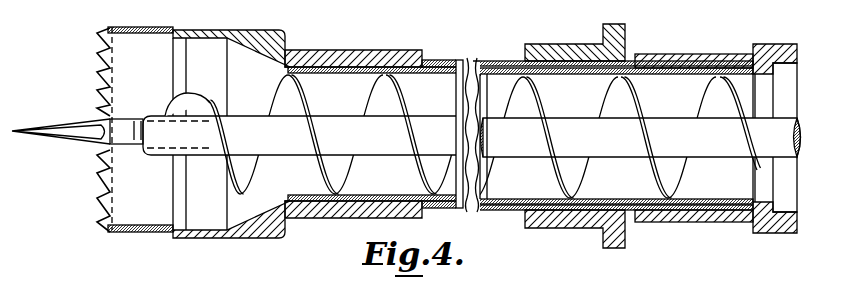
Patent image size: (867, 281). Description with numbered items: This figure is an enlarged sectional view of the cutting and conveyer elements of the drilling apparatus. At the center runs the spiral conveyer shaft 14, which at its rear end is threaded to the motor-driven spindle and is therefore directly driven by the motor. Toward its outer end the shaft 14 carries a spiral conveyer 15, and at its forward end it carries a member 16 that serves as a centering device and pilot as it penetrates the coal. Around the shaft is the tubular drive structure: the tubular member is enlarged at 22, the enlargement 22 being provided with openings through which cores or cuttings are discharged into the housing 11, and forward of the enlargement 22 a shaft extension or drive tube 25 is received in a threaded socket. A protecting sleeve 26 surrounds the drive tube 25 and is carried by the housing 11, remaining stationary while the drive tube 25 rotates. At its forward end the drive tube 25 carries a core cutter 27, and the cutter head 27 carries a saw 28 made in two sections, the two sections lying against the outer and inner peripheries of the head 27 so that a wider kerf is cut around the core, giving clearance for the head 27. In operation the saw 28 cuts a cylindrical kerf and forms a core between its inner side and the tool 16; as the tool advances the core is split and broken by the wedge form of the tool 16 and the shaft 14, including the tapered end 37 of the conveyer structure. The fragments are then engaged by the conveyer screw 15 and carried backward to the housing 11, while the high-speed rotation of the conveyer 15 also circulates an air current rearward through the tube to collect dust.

The housing 11 is at (557, 43).
The spiral conveyer shaft 14 is at (662, 119).
The spiral conveyer 15 is at (385, 80).
The centering and pilot member 16 is at (52, 126).
The enlargement of tubular member 22 is at (758, 55).
The shaft extension or drive tube 25 is at (495, 80).
The protecting sleeve 26 is at (445, 58).
The core cutter 27 is at (302, 54).
The saw 28 is at (99, 55).
The tapered end of conveyer structure 37 is at (192, 97).